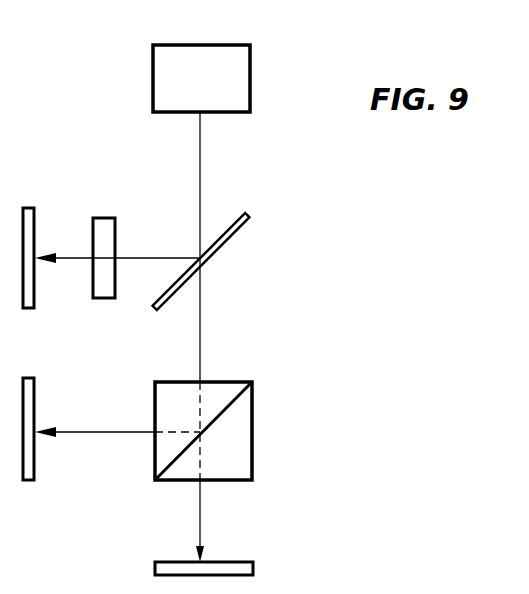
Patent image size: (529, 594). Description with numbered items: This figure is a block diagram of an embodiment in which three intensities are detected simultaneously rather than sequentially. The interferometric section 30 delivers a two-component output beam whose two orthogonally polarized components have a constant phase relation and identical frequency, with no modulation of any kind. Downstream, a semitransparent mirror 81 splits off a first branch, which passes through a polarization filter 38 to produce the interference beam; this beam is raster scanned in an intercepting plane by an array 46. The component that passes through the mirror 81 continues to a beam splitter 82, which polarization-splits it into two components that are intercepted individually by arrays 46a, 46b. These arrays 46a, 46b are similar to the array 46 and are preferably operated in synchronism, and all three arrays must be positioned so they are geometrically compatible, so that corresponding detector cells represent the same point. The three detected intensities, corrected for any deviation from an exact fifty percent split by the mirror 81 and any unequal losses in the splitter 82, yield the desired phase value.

The interferometric section 30 is at (237, 80).
The semitransparent mirror 81 is at (234, 234).
The polarization filter 38 is at (108, 238).
The array 46 is at (36, 222).
The array 46b is at (36, 466).
The beam splitter 82 is at (232, 445).
The array 46a is at (233, 563).